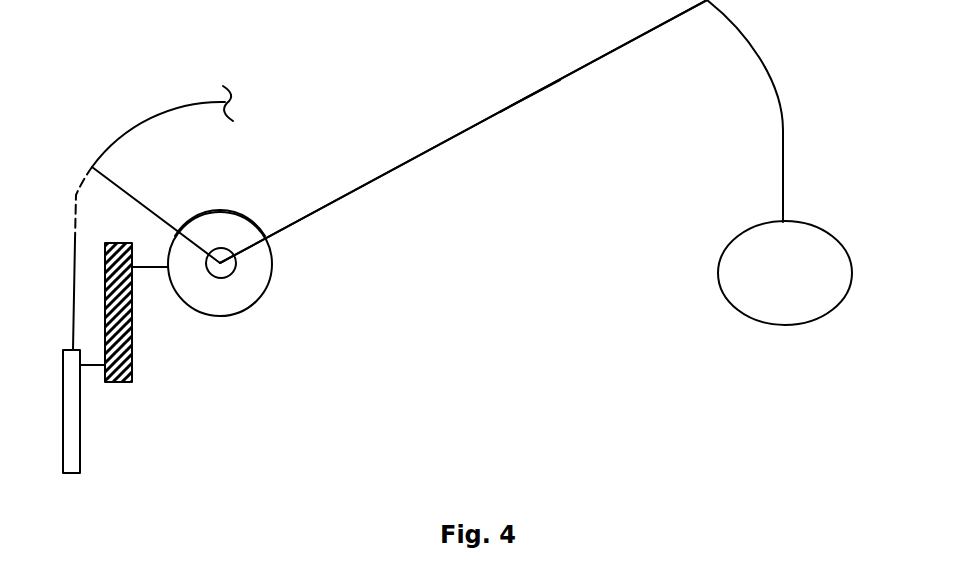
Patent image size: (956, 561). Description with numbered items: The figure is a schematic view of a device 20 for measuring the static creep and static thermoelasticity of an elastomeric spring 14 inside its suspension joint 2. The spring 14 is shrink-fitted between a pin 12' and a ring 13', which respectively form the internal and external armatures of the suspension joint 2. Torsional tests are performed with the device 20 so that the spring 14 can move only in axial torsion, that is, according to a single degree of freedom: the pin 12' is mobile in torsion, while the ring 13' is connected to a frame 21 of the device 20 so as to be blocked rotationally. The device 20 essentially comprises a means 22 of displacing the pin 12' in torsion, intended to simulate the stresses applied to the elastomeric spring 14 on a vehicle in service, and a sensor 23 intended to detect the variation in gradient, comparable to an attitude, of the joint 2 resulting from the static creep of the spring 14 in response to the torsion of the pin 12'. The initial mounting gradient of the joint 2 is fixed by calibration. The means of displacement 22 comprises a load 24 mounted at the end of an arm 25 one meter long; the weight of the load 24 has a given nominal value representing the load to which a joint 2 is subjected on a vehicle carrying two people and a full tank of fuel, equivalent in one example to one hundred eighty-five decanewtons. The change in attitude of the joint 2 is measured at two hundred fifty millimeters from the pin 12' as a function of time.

The suspension joint 2 is at (223, 280).
The pin 12' is at (228, 250).
The ring 13' is at (220, 204).
The elastomeric spring 14 is at (232, 298).
The device 20 is at (473, 313).
The frame 21 is at (132, 327).
The means of displacing in torsion 22 is at (507, 62).
The sensor 23 is at (83, 445).
The load 24 is at (792, 296).
The arm 25 is at (525, 97).